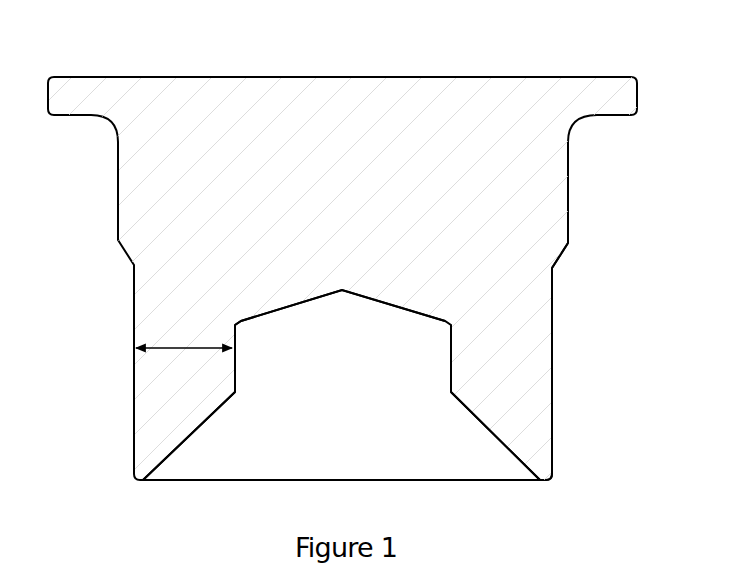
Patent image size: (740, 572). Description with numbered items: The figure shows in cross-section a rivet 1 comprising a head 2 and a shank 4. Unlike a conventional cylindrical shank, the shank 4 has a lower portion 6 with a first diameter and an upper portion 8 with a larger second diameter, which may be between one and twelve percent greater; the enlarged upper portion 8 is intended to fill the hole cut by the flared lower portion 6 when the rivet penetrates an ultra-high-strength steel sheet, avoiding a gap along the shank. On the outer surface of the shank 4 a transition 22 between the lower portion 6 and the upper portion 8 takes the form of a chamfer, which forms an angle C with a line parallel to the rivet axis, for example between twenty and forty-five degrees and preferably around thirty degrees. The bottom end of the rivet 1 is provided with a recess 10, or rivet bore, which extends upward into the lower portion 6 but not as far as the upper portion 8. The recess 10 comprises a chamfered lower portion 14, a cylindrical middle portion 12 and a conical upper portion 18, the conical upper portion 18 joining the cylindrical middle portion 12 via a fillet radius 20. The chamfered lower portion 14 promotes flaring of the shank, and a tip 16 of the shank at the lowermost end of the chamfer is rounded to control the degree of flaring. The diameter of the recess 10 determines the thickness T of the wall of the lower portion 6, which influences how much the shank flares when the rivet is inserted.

The rivet 1 is at (127, 491).
The head 2 is at (511, 86).
The shank 4 is at (178, 235).
The lower portion 6 is at (190, 368).
The upper portion 8 is at (155, 157).
The recess 10 is at (341, 385).
The cylindrical middle portion 12 is at (243, 358).
The chamfered lower portion 14 is at (222, 447).
The tip 16 is at (562, 476).
The conical upper portion 18 is at (341, 296).
The fillet radius 20 is at (229, 320).
The transition 22 is at (578, 272).
The wall thickness T is at (195, 348).
The angle C is at (582, 250).